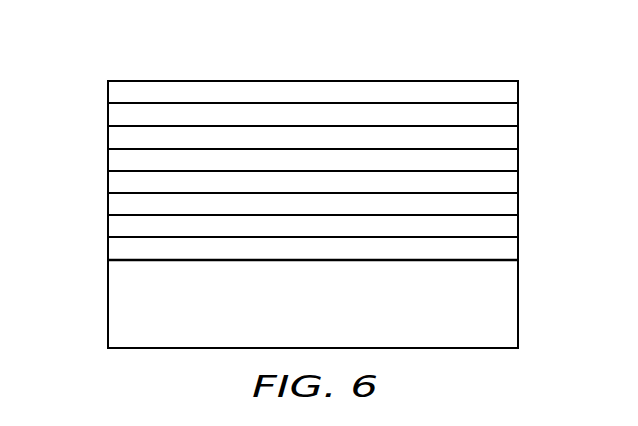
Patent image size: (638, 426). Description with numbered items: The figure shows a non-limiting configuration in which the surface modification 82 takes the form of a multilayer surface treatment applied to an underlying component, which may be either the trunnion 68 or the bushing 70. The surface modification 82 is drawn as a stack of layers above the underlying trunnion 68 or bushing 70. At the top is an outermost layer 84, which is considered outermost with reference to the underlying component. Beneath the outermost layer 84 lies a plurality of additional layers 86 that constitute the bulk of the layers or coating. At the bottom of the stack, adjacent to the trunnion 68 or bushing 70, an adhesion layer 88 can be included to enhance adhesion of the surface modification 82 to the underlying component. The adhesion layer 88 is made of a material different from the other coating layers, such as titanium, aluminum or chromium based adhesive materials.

The surface modification 82 is at (308, 182).
The outermost layer 84 is at (143, 93).
The additional layers 86 is at (533, 103).
The adhesion layer 88 is at (122, 248).
The trunnion 68 is at (313, 304).
The bushing 70 is at (382, 324).